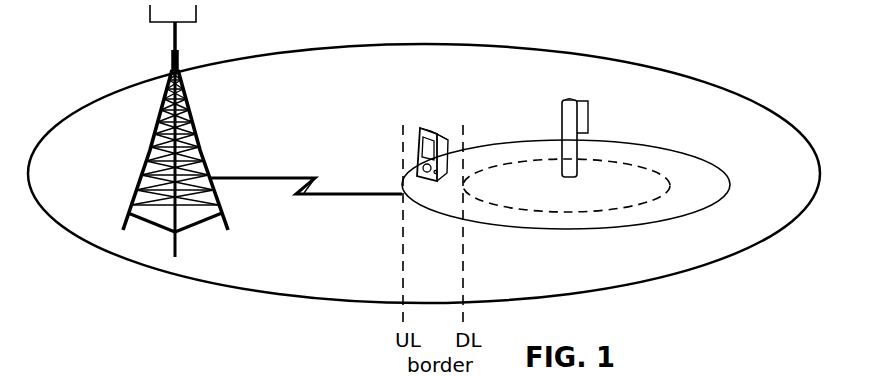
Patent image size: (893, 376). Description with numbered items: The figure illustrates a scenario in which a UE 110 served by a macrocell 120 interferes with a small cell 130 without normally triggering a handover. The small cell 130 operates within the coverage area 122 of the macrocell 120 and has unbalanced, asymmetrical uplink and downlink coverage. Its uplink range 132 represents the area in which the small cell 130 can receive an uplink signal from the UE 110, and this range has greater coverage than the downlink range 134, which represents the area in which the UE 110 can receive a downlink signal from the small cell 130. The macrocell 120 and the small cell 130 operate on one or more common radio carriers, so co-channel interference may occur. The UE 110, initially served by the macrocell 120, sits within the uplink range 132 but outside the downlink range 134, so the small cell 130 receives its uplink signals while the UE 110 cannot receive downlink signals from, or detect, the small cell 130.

The UE 110 is at (420, 128).
The macrocell 120 is at (140, 190).
The coverage area 122 is at (113, 94).
The small cell 130 is at (562, 128).
The uplink range 132 is at (690, 153).
The downlink range 134 is at (670, 185).